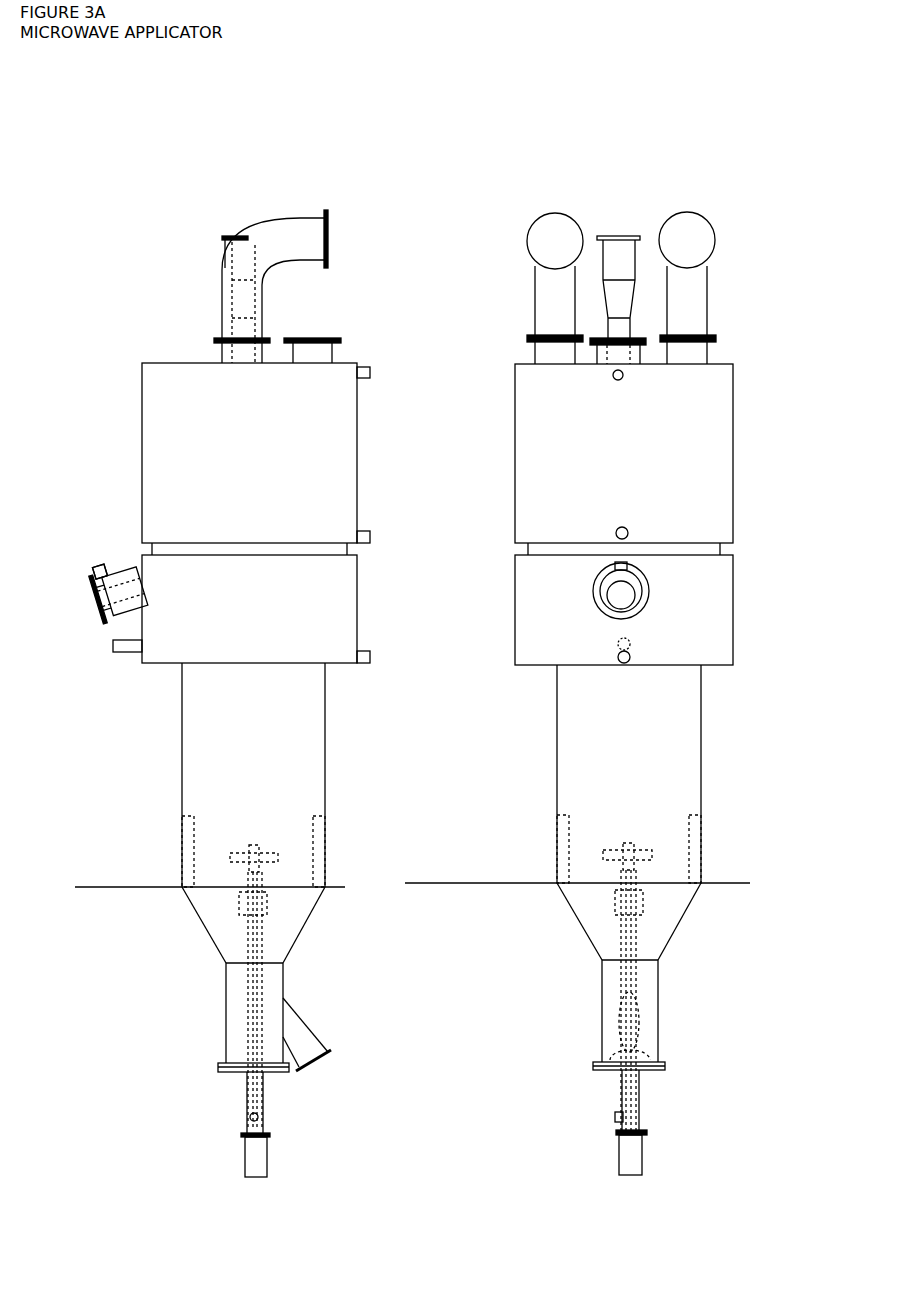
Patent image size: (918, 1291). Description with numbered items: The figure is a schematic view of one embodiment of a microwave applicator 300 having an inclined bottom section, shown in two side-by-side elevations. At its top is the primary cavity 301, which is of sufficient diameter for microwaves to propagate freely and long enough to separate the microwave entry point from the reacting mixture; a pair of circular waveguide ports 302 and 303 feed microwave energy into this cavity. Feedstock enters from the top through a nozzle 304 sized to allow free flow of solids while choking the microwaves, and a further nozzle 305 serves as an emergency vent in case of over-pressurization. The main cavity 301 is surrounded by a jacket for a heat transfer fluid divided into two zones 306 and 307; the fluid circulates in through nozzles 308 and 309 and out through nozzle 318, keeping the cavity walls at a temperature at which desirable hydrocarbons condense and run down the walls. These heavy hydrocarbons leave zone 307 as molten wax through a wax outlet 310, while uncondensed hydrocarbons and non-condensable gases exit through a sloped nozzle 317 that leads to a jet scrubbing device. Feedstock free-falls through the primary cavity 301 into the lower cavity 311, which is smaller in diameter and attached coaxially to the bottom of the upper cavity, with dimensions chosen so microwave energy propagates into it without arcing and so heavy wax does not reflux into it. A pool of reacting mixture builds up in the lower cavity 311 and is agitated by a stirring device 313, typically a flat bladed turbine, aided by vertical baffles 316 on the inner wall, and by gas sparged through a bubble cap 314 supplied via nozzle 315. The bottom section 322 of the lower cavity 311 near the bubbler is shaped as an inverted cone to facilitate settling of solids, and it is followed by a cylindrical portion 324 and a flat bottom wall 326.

The microwave applicator 300 is at (405, 632).
The primary cavity 301 is at (555, 488).
The circular waveguide port 302 is at (556, 262).
The circular waveguide port 303 is at (687, 292).
The nozzle 304 is at (627, 258).
The nozzle 305 is at (312, 346).
The zone 306 is at (358, 425).
The zone 307 is at (358, 595).
The nozzle 308 is at (368, 537).
The nozzle 309 is at (368, 657).
The wax outlet 310 is at (113, 643).
The lower cavity 311 is at (215, 737).
The stirring device 313 is at (232, 855).
The bubble cap 314 is at (268, 905).
The nozzle 315 is at (615, 1117).
The vertical baffles 316 is at (315, 842).
The nozzle 317 is at (97, 604).
The nozzle 318 is at (370, 372).
The bottom section 322 is at (305, 930).
The cylindrical portion 324 is at (226, 990).
The flat bottom wall 326 is at (218, 1063).